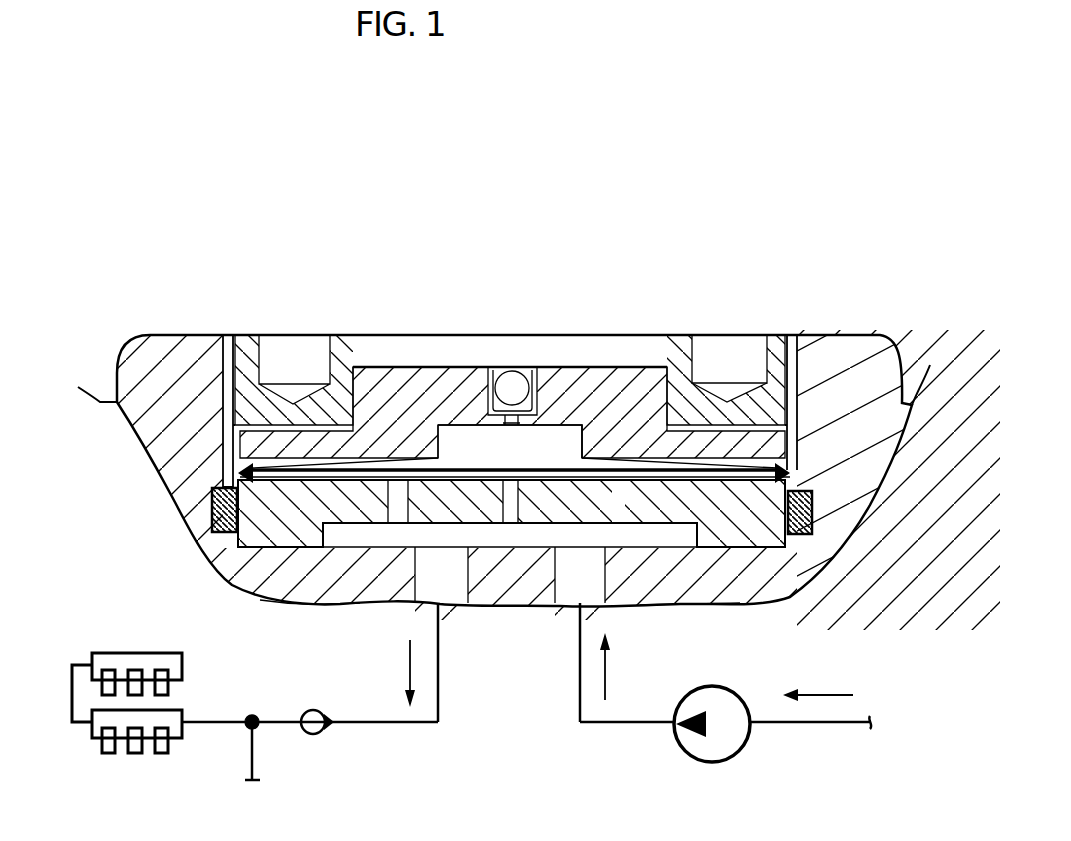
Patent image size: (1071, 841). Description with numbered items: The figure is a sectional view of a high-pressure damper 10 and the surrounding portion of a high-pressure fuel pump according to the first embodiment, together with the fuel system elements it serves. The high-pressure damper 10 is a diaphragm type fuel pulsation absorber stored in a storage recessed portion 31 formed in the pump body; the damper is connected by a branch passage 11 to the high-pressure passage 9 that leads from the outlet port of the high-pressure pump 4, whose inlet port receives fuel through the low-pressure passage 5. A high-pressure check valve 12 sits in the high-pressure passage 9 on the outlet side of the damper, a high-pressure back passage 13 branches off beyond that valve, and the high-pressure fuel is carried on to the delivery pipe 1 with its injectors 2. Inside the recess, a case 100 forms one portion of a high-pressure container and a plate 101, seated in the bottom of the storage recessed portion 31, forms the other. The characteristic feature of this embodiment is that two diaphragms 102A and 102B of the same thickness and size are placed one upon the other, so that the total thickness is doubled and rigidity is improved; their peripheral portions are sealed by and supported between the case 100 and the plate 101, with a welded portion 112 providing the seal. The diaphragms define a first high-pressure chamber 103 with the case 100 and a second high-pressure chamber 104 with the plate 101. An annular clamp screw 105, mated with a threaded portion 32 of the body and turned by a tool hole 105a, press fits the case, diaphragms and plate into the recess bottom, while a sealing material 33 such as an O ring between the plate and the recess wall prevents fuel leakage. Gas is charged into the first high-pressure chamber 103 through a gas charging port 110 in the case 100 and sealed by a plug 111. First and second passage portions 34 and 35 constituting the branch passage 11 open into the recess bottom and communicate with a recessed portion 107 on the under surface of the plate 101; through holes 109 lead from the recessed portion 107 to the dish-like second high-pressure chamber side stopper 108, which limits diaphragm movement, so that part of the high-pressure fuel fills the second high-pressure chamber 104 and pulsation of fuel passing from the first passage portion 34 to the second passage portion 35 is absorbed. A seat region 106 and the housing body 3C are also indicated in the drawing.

The delivery pipe 1 is at (136, 697).
The injectors 2 is at (167, 687).
The housing 3C is at (539, 501).
The high-pressure pump 4 is at (705, 753).
The low-pressure passage 5 is at (817, 727).
The high-pressure passage 9 is at (397, 725).
The high-pressure damper 10 is at (521, 519).
The branch passage 11 is at (438, 668).
The high-pressure check valve 12 is at (307, 737).
The high-pressure back passage 13 is at (253, 765).
The storage recessed portion 31 is at (290, 600).
The threaded portion 32 is at (213, 365).
The sealing material 33 is at (210, 527).
The first passage portion 34 is at (583, 590).
The second passage portion 35 is at (400, 600).
The case 100 is at (512, 328).
The plate 101 is at (548, 660).
The diaphragm 102A is at (418, 458).
The diaphragm 102B is at (295, 575).
The first high-pressure chamber 103 is at (555, 448).
The second high-pressure chamber 104 is at (512, 525).
The annular clamp screw 105 is at (759, 315).
The tool hole 105a is at (728, 352).
The valve seat 106 is at (588, 452).
The recessed portion 107 is at (690, 590).
The second high-pressure chamber side stopper 108 is at (510, 548).
The through holes 109 is at (395, 522).
The gas charging port 110 is at (513, 445).
The plug 111 is at (512, 380).
The welded portion 112 is at (790, 473).